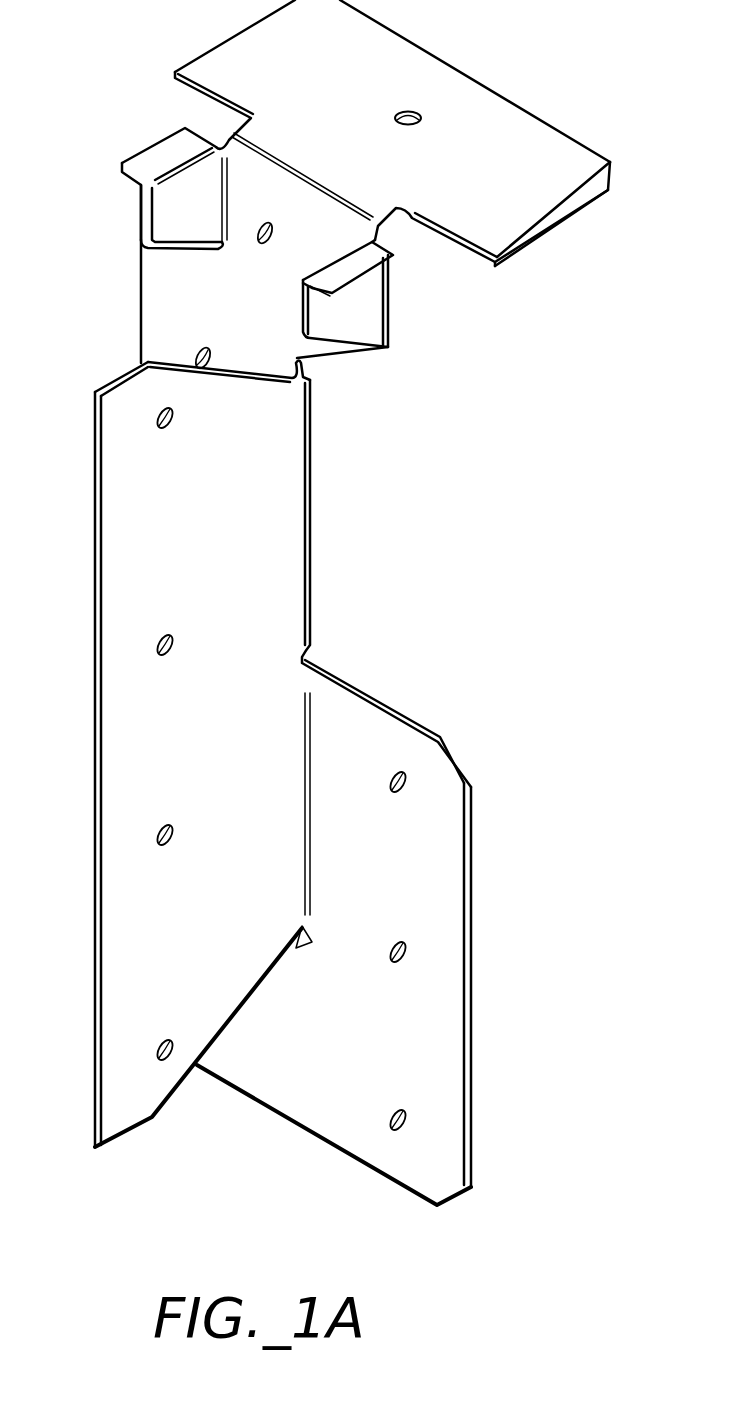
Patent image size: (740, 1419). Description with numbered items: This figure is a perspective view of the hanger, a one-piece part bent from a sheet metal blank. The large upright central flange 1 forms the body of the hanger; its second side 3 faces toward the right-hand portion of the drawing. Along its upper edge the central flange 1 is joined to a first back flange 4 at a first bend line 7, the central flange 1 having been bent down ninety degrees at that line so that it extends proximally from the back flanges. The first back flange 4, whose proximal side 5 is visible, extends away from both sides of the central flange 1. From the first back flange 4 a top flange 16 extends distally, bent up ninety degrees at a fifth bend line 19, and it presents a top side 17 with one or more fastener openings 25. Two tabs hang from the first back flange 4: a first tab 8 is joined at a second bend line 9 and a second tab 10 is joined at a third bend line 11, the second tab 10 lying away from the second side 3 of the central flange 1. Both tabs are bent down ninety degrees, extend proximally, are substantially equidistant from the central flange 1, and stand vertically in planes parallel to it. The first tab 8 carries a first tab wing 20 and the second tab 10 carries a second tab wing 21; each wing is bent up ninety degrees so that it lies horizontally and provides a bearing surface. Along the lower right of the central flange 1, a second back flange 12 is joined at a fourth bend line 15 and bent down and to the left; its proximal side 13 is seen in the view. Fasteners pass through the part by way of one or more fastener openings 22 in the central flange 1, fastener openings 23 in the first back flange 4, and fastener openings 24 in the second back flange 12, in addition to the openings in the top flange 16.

The central flange 1 is at (121, 562).
The second side 3 is at (270, 500).
The first back flange 4 is at (224, 274).
The proximal side 5 is at (162, 285).
The first bend line 7 is at (315, 420).
The first tab 8 is at (150, 213).
The second bend line 9 is at (224, 190).
The second tab 10 is at (303, 310).
The third bend line 11 is at (392, 298).
The second back flange 12 is at (441, 848).
The proximal side 13 is at (425, 1025).
The fourth bend line 15 is at (308, 840).
The top flange 16 is at (366, 133).
The top side 17 is at (530, 140).
The fifth bend line 19 is at (298, 173).
The first tab wing 20 is at (165, 150).
The second tab wing 21 is at (360, 262).
The fastener openings 22 is at (172, 424).
The fastener openings 23 is at (272, 232).
The fastener openings 24 is at (392, 784).
The fastener openings 25 is at (410, 108).